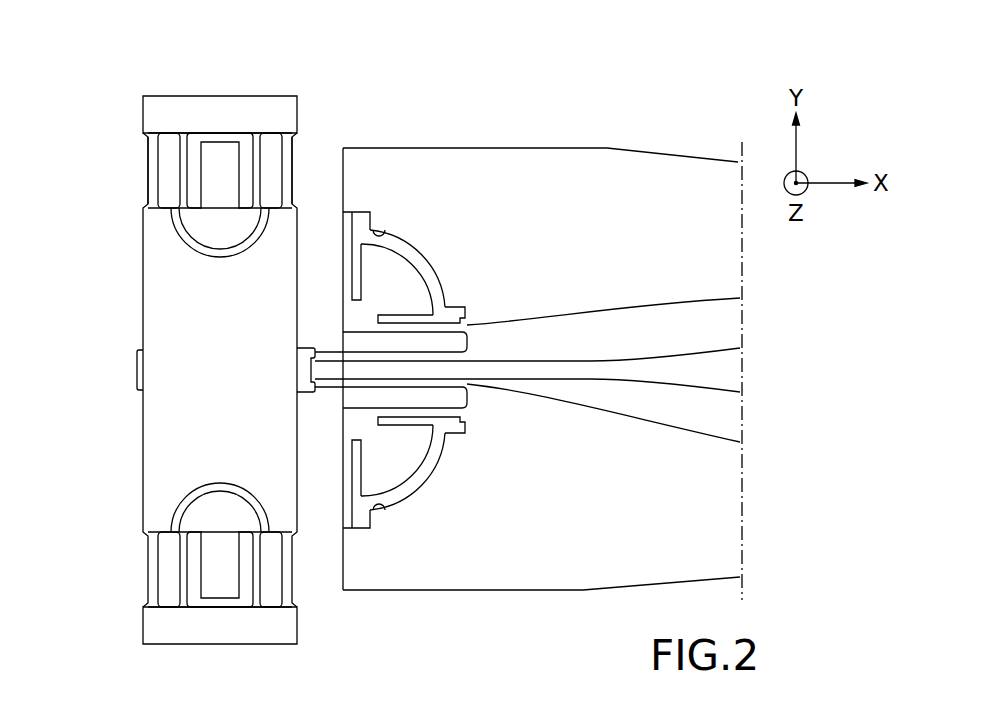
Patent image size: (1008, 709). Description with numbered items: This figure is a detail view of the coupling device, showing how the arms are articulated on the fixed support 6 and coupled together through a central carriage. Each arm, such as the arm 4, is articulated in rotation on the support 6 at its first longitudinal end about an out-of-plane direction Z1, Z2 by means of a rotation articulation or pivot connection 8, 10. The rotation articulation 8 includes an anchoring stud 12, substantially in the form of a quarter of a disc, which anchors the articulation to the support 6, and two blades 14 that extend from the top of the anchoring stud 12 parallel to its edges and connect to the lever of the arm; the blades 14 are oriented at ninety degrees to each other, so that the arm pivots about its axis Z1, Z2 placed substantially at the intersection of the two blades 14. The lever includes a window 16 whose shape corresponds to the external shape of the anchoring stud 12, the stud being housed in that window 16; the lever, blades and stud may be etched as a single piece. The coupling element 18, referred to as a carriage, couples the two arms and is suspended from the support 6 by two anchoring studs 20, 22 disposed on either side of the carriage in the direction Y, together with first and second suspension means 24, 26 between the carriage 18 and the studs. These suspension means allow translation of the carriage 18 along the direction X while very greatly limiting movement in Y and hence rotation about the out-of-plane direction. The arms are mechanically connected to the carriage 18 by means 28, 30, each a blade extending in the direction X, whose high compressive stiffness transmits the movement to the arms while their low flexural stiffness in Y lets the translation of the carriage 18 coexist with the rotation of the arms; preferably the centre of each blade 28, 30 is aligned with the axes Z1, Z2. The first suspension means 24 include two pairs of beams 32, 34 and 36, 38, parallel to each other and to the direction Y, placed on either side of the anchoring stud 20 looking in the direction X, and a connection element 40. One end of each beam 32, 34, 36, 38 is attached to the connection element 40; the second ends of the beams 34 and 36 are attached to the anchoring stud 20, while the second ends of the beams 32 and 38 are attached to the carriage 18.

The arm 4 is at (540, 592).
The support 6 is at (600, 128).
The rotation articulation 8 is at (418, 243).
The rotation articulation 10 is at (426, 510).
The anchoring stud 12 is at (410, 288).
The blades 14 is at (462, 326).
The window 16 is at (376, 232).
The coupling element 18 is at (127, 373).
The anchoring stud 20 is at (213, 150).
The anchoring stud 22 is at (215, 590).
The first suspension means 24 is at (183, 148).
The second suspension means 26 is at (166, 588).
The blade 28 is at (740, 298).
The blade 30 is at (740, 442).
The beam 32 is at (148, 147).
The beam 34 is at (188, 147).
The beam 36 is at (263, 147).
The beam 38 is at (295, 147).
The connection element 40 is at (158, 107).
The out-of-plane direction Z1 is at (435, 213).
The out-of-plane direction Z2 is at (384, 546).